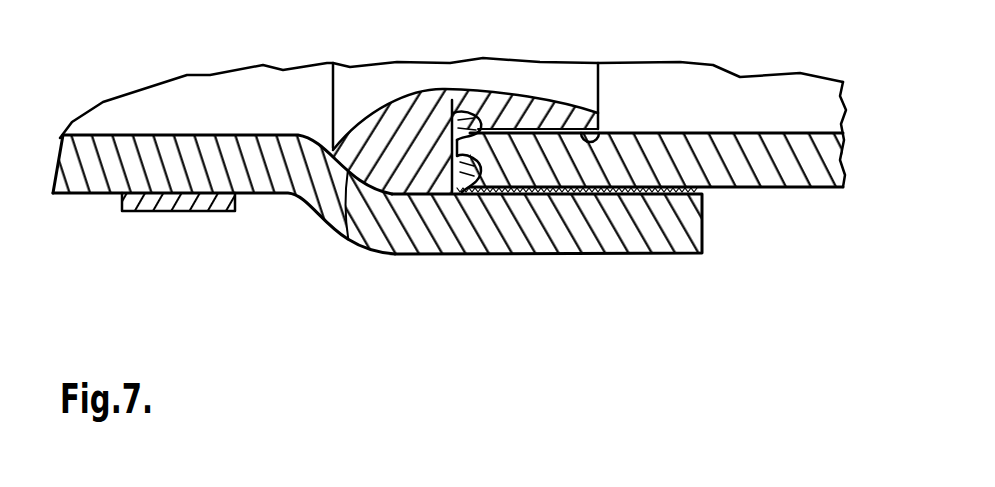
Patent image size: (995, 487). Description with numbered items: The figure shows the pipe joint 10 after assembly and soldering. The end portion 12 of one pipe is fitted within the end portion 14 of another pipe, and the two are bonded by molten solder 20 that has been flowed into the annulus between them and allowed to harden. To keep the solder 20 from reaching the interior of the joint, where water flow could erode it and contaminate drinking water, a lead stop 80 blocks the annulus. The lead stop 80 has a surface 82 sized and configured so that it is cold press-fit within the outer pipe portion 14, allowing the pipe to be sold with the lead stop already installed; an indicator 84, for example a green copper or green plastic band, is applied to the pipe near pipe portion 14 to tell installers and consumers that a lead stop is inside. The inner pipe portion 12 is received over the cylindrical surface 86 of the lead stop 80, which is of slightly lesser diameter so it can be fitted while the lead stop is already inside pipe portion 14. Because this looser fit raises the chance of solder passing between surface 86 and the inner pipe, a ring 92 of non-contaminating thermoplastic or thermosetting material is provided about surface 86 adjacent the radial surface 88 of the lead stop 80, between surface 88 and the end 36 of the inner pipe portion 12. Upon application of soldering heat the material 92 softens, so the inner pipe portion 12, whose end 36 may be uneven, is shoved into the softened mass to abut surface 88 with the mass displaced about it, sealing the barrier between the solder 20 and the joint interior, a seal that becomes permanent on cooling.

The pipe joint 10 is at (598, 277).
The end portion of one pipe 12 is at (797, 187).
The end portion of another pipe 14 is at (680, 253).
The solder 20 is at (580, 194).
The end of the inner pipe portion 36 is at (452, 100).
The lead stop 80 is at (395, 100).
The surface 82 is at (350, 238).
The indicator 84 is at (198, 212).
The cylindrical surface 86 is at (605, 133).
The radial surface 88 is at (470, 194).
The ring of thermoplastic or thermosetting material 92 is at (477, 113).